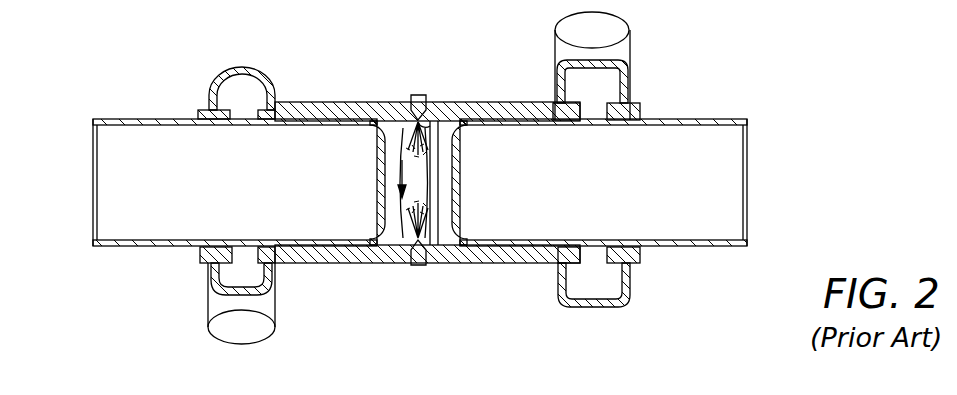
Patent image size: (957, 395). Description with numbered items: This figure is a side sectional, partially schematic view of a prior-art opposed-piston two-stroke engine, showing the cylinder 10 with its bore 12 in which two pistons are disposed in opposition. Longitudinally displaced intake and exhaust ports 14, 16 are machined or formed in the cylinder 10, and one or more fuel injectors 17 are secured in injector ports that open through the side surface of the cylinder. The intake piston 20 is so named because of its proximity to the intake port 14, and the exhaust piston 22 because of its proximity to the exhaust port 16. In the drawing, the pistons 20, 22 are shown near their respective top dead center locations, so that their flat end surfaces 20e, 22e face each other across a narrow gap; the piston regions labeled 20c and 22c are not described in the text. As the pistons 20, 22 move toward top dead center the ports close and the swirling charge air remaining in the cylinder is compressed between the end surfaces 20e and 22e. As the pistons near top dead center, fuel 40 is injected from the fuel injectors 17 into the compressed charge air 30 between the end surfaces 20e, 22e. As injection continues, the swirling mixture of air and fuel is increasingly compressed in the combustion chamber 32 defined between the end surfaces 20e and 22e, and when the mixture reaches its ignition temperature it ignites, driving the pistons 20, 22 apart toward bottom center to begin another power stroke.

The cylinder 10 is at (477, 100).
The bore 12 is at (440, 125).
The intake port 14 is at (243, 118).
The exhaust port 16 is at (600, 118).
The fuel injector 17 is at (418, 95).
The intake piston 20 is at (122, 246).
The first pipe collar 20c is at (330, 122).
The end surface of intake piston 20e is at (385, 135).
The exhaust piston 22 is at (692, 246).
The second pipe collar 22c is at (490, 243).
The end surface of exhaust piston 22e is at (440, 248).
The compressed charge air 30 is at (397, 245).
The combustion chamber 32 is at (450, 105).
The fuel 40 is at (372, 243).